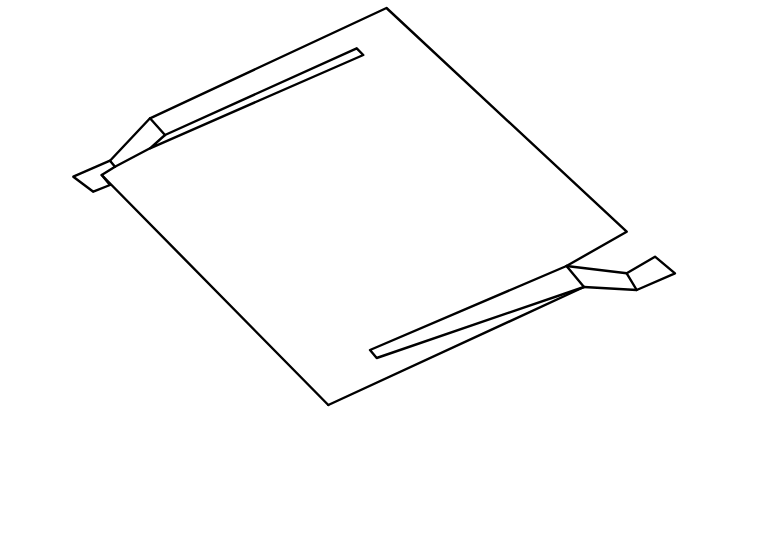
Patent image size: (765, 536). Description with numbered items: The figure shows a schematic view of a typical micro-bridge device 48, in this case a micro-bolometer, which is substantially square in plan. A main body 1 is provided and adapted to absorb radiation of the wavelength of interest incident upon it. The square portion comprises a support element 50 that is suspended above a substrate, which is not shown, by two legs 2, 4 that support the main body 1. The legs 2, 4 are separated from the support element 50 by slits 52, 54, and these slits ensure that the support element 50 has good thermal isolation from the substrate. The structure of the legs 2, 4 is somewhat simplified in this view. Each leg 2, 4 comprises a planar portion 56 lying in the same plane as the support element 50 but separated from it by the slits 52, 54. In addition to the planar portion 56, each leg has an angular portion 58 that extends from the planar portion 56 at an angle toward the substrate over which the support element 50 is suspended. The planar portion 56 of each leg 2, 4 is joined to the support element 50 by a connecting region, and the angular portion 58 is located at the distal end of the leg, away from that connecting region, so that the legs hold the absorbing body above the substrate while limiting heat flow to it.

The micro-bridge device 48 is at (180, 305).
The main body 1 is at (443, 160).
The support element 50 is at (448, 88).
The leg 4 is at (210, 102).
The slit 54 is at (275, 88).
The leg 2 is at (550, 298).
The planar portion 56 is at (460, 333).
The slit 52 is at (403, 342).
The angular portion 58 is at (621, 303).